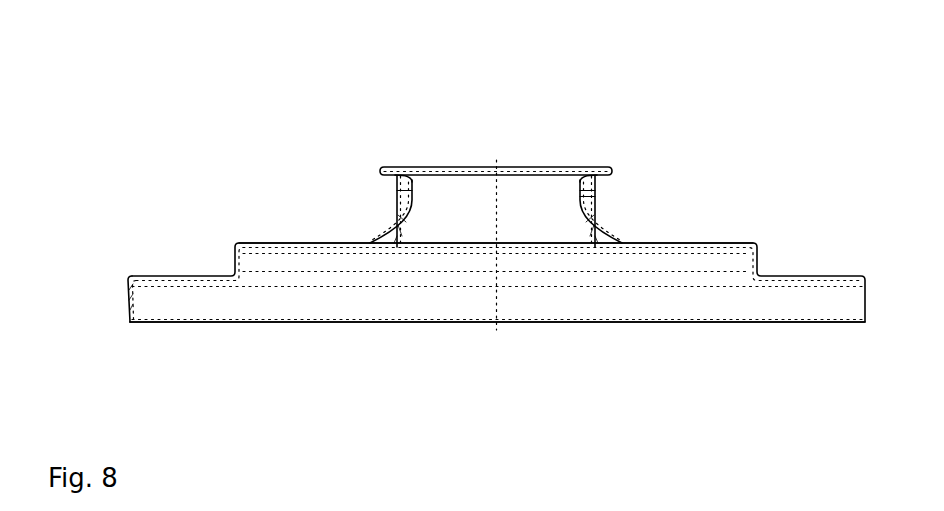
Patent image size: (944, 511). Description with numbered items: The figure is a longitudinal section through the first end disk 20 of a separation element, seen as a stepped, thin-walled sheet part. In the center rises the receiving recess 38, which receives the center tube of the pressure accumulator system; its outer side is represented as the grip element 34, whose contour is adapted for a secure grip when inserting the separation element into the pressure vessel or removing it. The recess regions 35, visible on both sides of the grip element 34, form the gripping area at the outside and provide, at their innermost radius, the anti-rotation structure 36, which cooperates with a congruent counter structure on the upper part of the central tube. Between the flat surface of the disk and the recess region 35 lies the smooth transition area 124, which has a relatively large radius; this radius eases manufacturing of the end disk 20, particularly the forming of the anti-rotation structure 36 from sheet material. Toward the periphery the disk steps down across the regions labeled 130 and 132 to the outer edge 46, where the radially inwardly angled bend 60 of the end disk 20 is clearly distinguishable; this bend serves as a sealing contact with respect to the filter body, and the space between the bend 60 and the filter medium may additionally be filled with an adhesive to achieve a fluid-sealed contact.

The first end disk 20 is at (716, 99).
The grip element 34 is at (576, 167).
The recess region 35 is at (556, 204).
The anti-rotation structure 36 is at (598, 186).
The receiving recess 38 is at (588, 196).
The outer edge 46 is at (126, 280).
The radially inwardly angled bend 60 is at (128, 321).
The transition area 124 is at (383, 232).
The outer plate portion 130 is at (188, 273).
The raised plate portion 132 is at (307, 247).